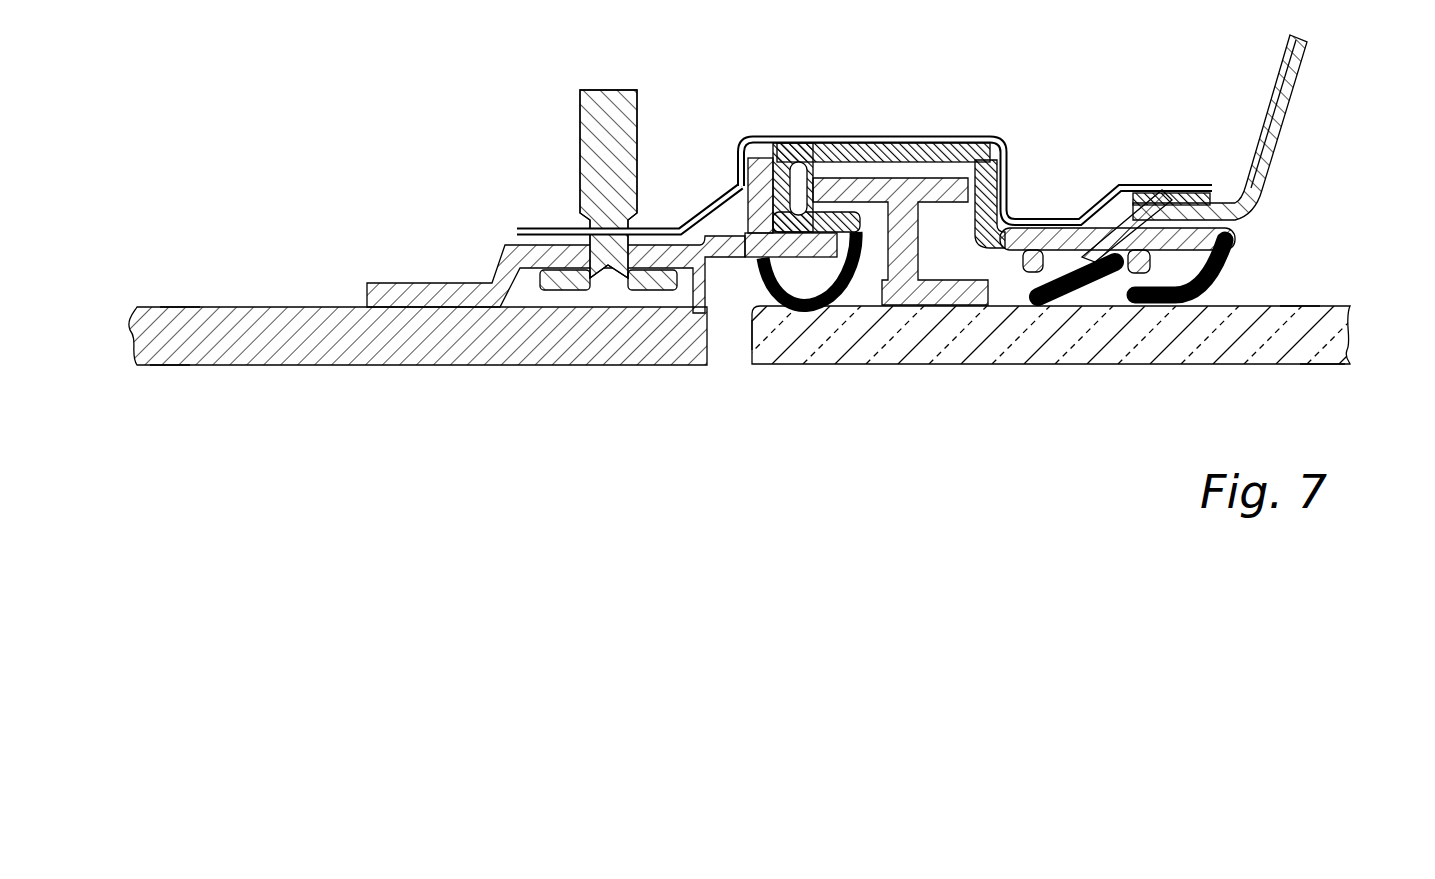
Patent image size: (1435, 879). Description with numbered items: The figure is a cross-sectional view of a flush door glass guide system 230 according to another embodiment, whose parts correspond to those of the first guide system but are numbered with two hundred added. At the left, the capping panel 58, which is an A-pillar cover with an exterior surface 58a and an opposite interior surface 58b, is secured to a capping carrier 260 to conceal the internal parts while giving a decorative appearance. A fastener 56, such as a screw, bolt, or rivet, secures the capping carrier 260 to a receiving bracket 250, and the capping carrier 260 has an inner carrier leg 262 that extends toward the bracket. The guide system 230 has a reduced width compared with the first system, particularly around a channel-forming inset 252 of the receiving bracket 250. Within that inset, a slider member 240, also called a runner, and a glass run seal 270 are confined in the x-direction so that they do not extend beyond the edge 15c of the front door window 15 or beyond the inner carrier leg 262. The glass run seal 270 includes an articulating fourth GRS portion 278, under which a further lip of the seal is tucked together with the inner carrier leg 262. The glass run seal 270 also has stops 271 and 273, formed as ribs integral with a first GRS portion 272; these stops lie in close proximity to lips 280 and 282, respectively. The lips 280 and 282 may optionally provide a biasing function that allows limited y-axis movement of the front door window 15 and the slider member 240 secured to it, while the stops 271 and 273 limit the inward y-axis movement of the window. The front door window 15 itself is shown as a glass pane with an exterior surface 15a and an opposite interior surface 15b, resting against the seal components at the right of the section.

The guide system 230 is at (288, 98).
The capping panel 58 is at (152, 320).
The exterior surface 58a is at (160, 367).
The interior surface 58b is at (170, 305).
The capping carrier 260 is at (437, 283).
The fastener 56 is at (612, 108).
The inner carrier leg 262 is at (738, 184).
The channel-forming inset 252 is at (736, 133).
The glass run seal 270 is at (876, 148).
The articulating fourth GRS portion 278 is at (810, 178).
The slider member 240 is at (938, 178).
The stop 273 is at (1025, 233).
The stop 271 is at (1110, 193).
The receiving bracket 250 is at (1182, 190).
The first GRS portion 272 is at (1066, 305).
The lip 282 is at (1034, 306).
The lip 280 is at (1145, 306).
The front door window 15 is at (1332, 330).
The exterior surface 15a is at (1325, 366).
The interior surface 15b is at (1300, 305).
The edge 15c is at (752, 338).